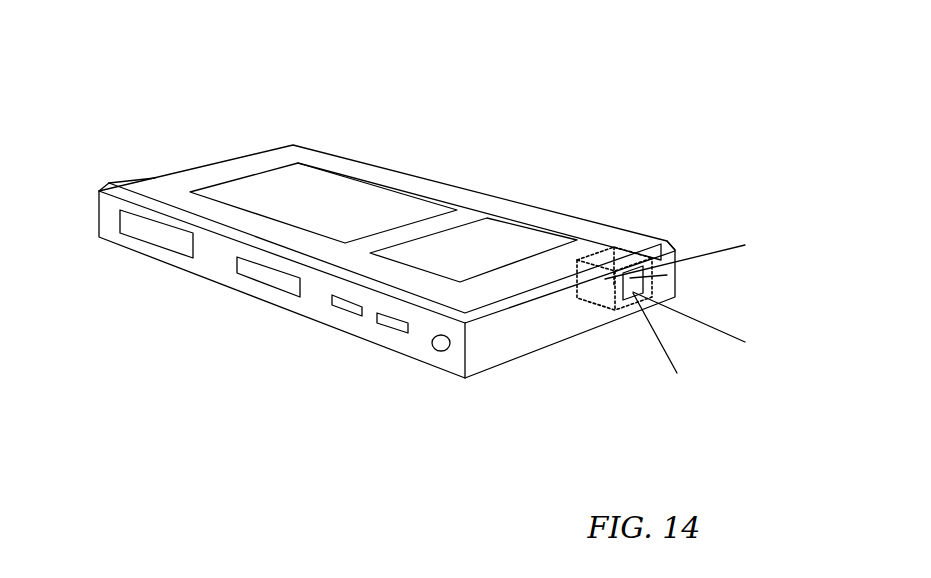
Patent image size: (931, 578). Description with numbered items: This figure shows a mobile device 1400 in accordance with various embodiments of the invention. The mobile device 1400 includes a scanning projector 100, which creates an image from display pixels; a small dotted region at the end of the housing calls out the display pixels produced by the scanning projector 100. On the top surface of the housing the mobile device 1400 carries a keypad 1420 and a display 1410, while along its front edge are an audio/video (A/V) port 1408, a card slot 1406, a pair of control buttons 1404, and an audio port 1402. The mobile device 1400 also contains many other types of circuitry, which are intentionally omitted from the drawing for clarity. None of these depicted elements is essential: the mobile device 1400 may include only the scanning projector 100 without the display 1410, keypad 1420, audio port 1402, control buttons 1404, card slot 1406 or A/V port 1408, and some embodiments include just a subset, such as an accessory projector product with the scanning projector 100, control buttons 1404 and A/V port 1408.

The mobile device 1400 is at (703, 97).
The scanning projector 100 is at (617, 252).
The keypad 1420 is at (333, 187).
The display 1410 is at (487, 227).
The audio/video (A/V) port 1408 is at (142, 230).
The card slot 1406 is at (262, 275).
The control buttons 1404 is at (383, 327).
The audio port 1402 is at (441, 352).